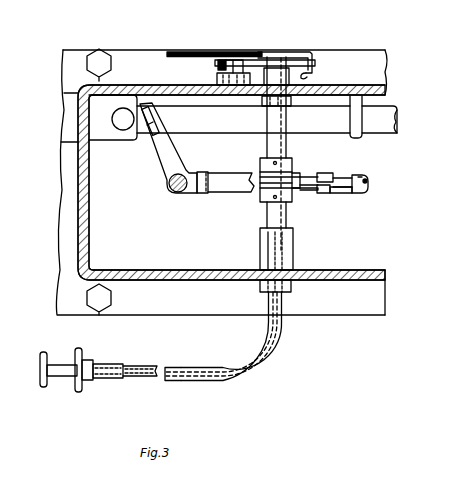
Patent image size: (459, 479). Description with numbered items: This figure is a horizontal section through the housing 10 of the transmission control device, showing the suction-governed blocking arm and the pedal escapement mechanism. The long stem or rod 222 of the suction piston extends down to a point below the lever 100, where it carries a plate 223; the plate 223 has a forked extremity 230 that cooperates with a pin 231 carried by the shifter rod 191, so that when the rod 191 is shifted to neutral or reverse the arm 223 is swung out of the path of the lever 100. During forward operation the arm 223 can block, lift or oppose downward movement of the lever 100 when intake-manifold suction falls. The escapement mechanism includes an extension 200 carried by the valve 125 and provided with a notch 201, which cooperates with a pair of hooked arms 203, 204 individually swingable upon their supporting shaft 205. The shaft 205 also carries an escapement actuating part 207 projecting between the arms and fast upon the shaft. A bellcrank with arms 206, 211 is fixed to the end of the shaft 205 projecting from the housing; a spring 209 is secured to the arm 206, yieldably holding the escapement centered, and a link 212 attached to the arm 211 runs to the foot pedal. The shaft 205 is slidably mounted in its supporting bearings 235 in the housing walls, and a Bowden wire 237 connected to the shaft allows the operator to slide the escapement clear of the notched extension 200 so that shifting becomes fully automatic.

The housing 10 is at (78, 202).
The lever 100 is at (218, 177).
The valve 125 is at (372, 182).
The shifter rod 191 is at (267, 117).
The extension 200 is at (335, 175).
The notch 201 is at (353, 176).
The hooked arm 203 is at (306, 191).
The hooked arm 204 is at (333, 194).
The supporting shaft 205 is at (286, 150).
The bellcrank arm 206 is at (259, 63).
The escapement actuating part 207 is at (300, 177).
The spring 209 is at (220, 68).
The bellcrank arm 211 is at (302, 71).
The link 212 is at (209, 46).
The stem or rod 222 is at (170, 195).
The plate 223 is at (193, 195).
The forked extremity 230 is at (147, 138).
The pin 231 is at (158, 120).
The supporting bearings 235 is at (272, 104).
The Bowden wire 237 is at (237, 367).